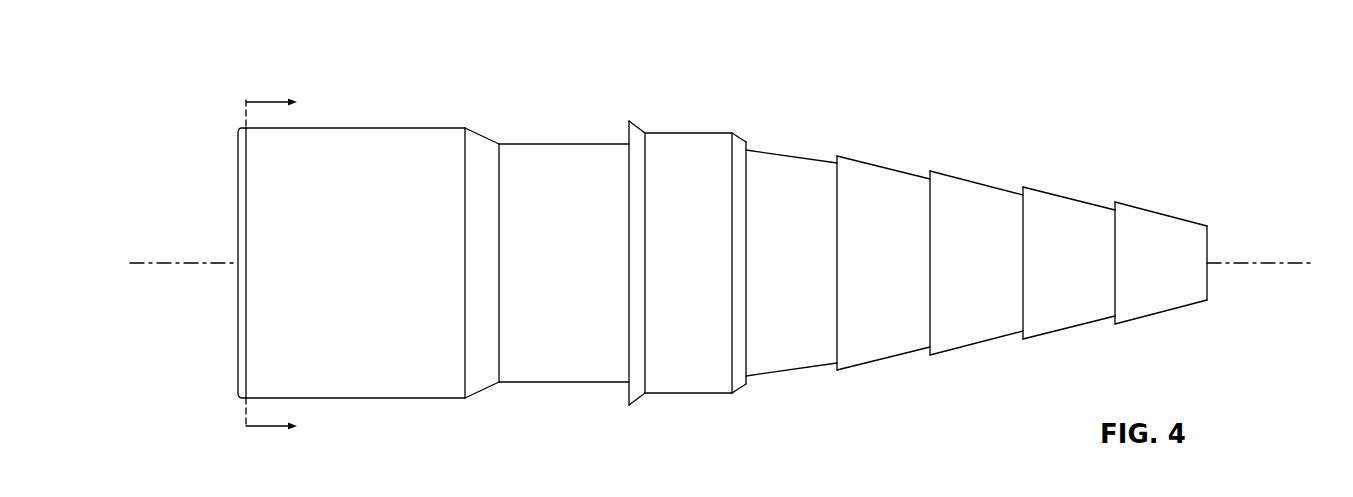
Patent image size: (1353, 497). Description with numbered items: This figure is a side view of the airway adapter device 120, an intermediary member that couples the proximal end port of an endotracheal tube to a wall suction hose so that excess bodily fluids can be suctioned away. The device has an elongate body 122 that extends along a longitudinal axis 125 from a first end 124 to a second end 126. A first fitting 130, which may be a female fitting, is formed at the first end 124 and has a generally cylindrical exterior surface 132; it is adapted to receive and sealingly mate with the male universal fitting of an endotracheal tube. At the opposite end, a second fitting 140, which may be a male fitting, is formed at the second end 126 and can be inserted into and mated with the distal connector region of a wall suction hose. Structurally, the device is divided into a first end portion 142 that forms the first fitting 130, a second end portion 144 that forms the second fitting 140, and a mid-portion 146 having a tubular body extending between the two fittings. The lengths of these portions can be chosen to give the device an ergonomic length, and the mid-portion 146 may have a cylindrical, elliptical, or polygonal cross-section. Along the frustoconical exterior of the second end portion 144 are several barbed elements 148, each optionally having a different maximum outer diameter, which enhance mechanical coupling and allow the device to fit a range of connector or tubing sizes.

The airway adapter device 120 is at (734, 260).
The elongate body 122 is at (566, 153).
The first end 124 is at (238, 196).
The longitudinal axis 125 is at (1267, 263).
The second end 126 is at (1200, 271).
The first fitting 130 is at (440, 399).
The exterior surface 132 is at (440, 128).
The second fitting 140 is at (803, 153).
The first end portion 142 is at (238, 128).
The second end portion 144 is at (1207, 226).
The mid-portion 146 is at (499, 144).
The barbed elements 148 is at (883, 360).